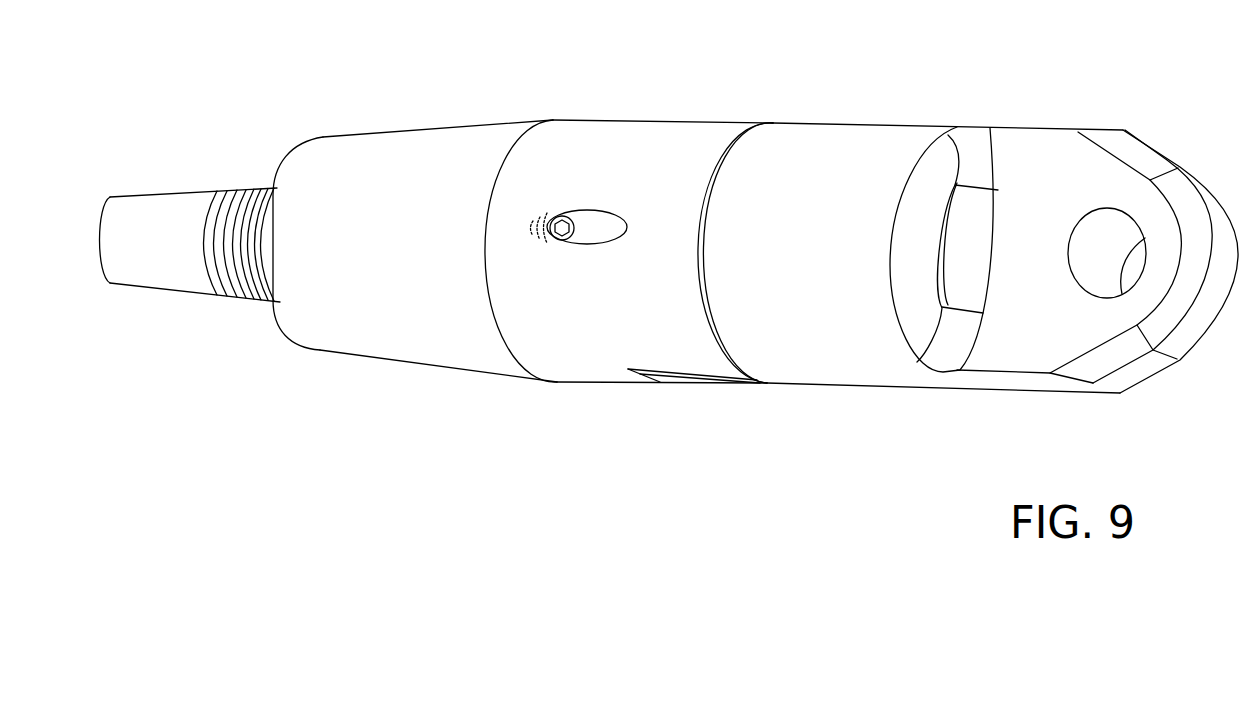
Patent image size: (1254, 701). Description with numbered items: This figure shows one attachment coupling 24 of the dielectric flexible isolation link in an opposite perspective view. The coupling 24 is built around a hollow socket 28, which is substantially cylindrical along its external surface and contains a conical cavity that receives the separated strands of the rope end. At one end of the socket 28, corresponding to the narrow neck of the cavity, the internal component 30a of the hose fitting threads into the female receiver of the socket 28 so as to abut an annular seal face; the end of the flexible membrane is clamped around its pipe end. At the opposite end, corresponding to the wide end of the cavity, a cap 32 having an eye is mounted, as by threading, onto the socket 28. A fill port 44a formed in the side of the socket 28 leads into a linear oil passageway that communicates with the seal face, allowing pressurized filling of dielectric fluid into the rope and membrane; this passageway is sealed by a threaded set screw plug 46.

The attachment coupling 24 is at (845, 70).
The internal component of hose fitting 30a is at (178, 190).
The socket 28 is at (558, 387).
The threaded set screw plug 46 is at (562, 217).
The fill port 44a is at (590, 226).
The cap 32 is at (838, 395).